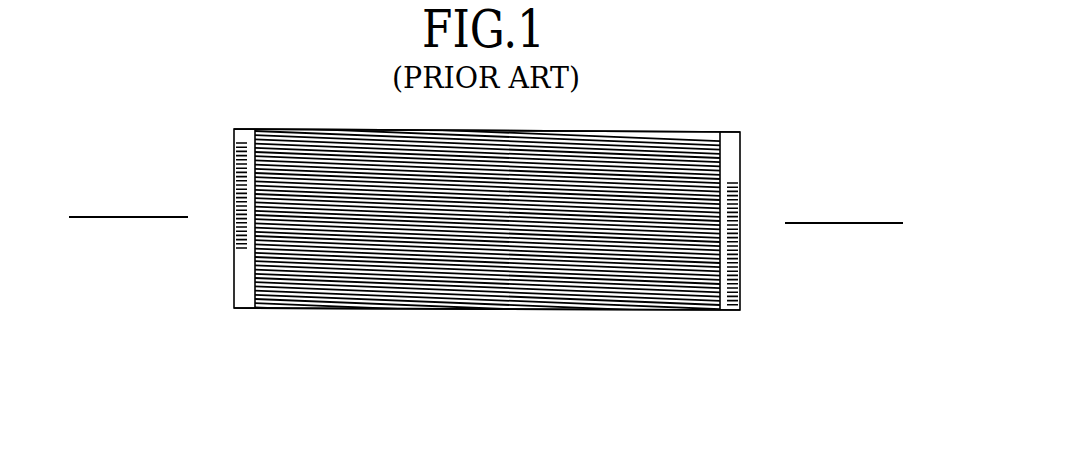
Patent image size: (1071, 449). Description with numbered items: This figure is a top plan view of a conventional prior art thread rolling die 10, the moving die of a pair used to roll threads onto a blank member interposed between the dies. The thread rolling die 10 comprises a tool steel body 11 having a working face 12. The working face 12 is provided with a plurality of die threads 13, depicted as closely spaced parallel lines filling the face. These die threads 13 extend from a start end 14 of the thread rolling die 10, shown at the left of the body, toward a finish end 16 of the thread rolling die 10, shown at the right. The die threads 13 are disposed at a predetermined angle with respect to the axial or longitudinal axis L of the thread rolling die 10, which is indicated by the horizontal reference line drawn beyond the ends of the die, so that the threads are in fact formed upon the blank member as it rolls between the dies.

The axis L is at (118, 217).
The thread rolling die 10 is at (228, 233).
The tool steel body 11 is at (290, 311).
The working face 12 is at (475, 297).
The die threads 13 is at (508, 309).
The start end 14 is at (255, 276).
The finish end 16 is at (719, 302).